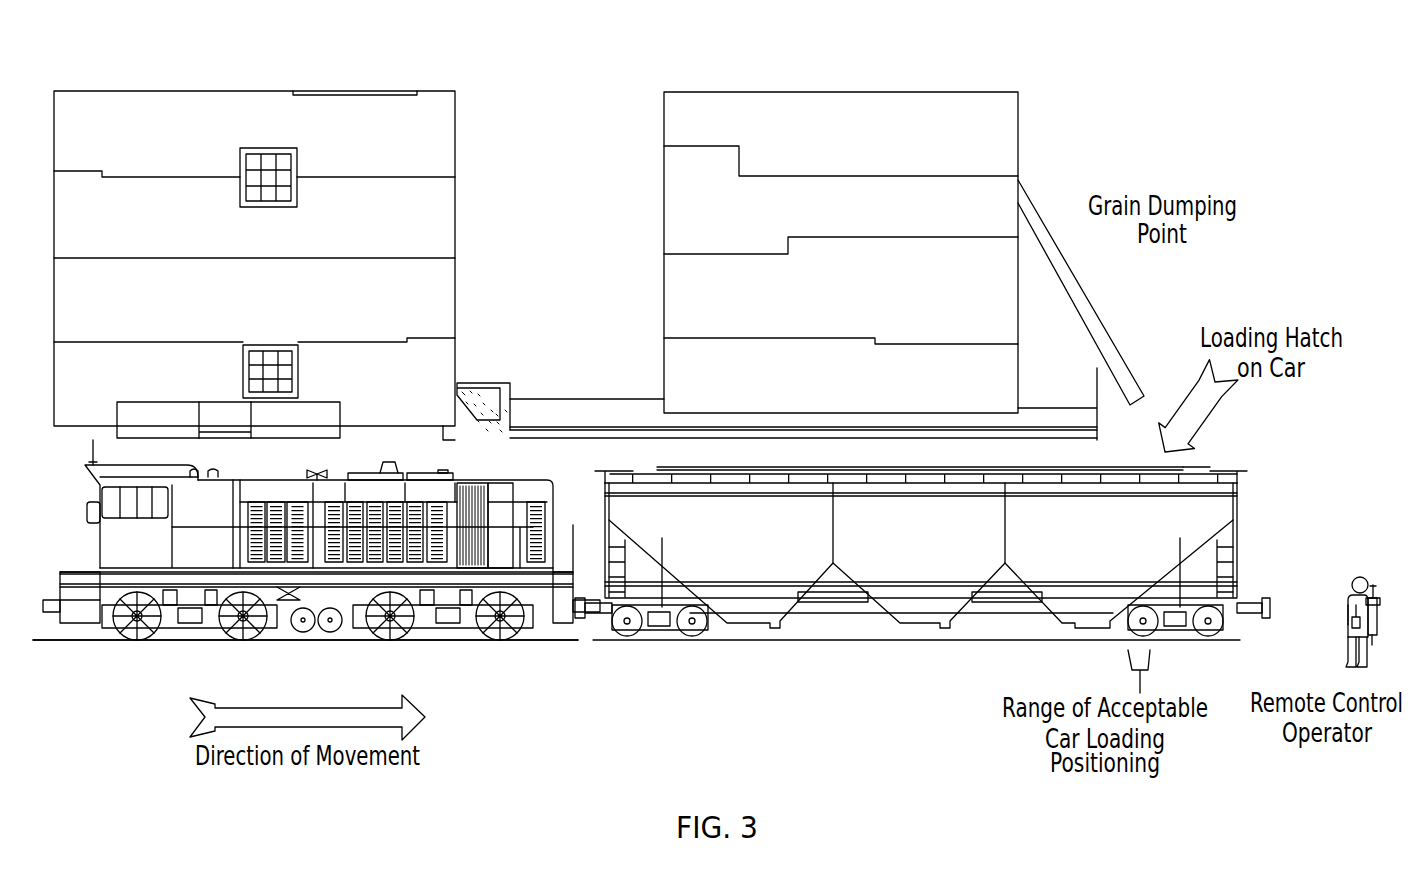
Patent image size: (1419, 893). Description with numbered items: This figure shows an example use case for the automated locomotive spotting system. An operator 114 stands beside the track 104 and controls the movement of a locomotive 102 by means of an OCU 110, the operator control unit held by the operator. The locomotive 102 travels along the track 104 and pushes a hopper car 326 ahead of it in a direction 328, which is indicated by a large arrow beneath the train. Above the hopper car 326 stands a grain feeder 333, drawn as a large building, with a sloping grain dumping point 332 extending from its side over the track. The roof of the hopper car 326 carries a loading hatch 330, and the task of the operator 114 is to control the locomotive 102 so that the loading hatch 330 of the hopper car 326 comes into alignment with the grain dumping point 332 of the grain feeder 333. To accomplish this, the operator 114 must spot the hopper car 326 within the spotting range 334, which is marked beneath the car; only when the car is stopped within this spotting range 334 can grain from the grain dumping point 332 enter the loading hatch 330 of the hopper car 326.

The locomotive 102 is at (108, 552).
The track 104 is at (528, 650).
The OCU 110 is at (1347, 623).
The operator 114 is at (1357, 572).
The hopper car 326 is at (898, 567).
The direction 328 is at (333, 708).
The loading hatch 330 is at (1219, 453).
The grain dumping point 332 is at (1100, 317).
The grain feeder 333 is at (1002, 140).
The spotting range 334 is at (1103, 663).